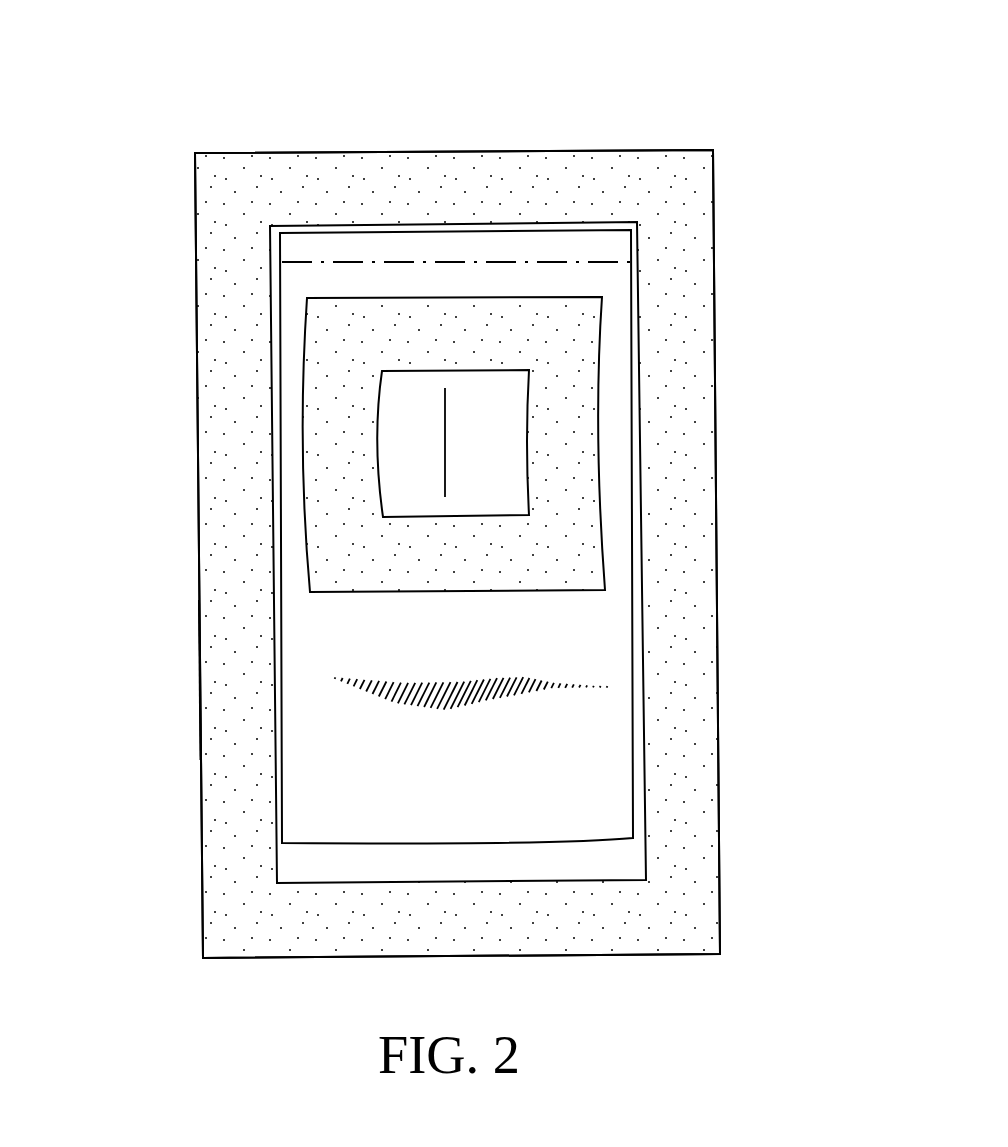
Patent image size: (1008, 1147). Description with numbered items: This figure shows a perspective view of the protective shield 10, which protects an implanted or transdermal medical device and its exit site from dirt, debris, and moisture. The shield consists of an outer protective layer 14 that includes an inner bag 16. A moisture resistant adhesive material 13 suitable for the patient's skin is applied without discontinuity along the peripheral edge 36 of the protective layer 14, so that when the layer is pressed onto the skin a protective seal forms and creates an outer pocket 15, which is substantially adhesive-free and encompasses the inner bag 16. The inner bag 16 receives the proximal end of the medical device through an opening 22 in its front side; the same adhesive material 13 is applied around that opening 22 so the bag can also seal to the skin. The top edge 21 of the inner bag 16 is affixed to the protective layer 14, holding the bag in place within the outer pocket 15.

The protective shield 10 is at (369, 47).
The moisture resistant adhesive material 13 is at (452, 444).
The protective layer 14 is at (457, 491).
The outer pocket 15 is at (346, 574).
The inner bag 16 is at (556, 536).
The top edge 21 is at (393, 184).
The opening 22 is at (615, 443).
The peripheral edge 36 is at (118, 668).